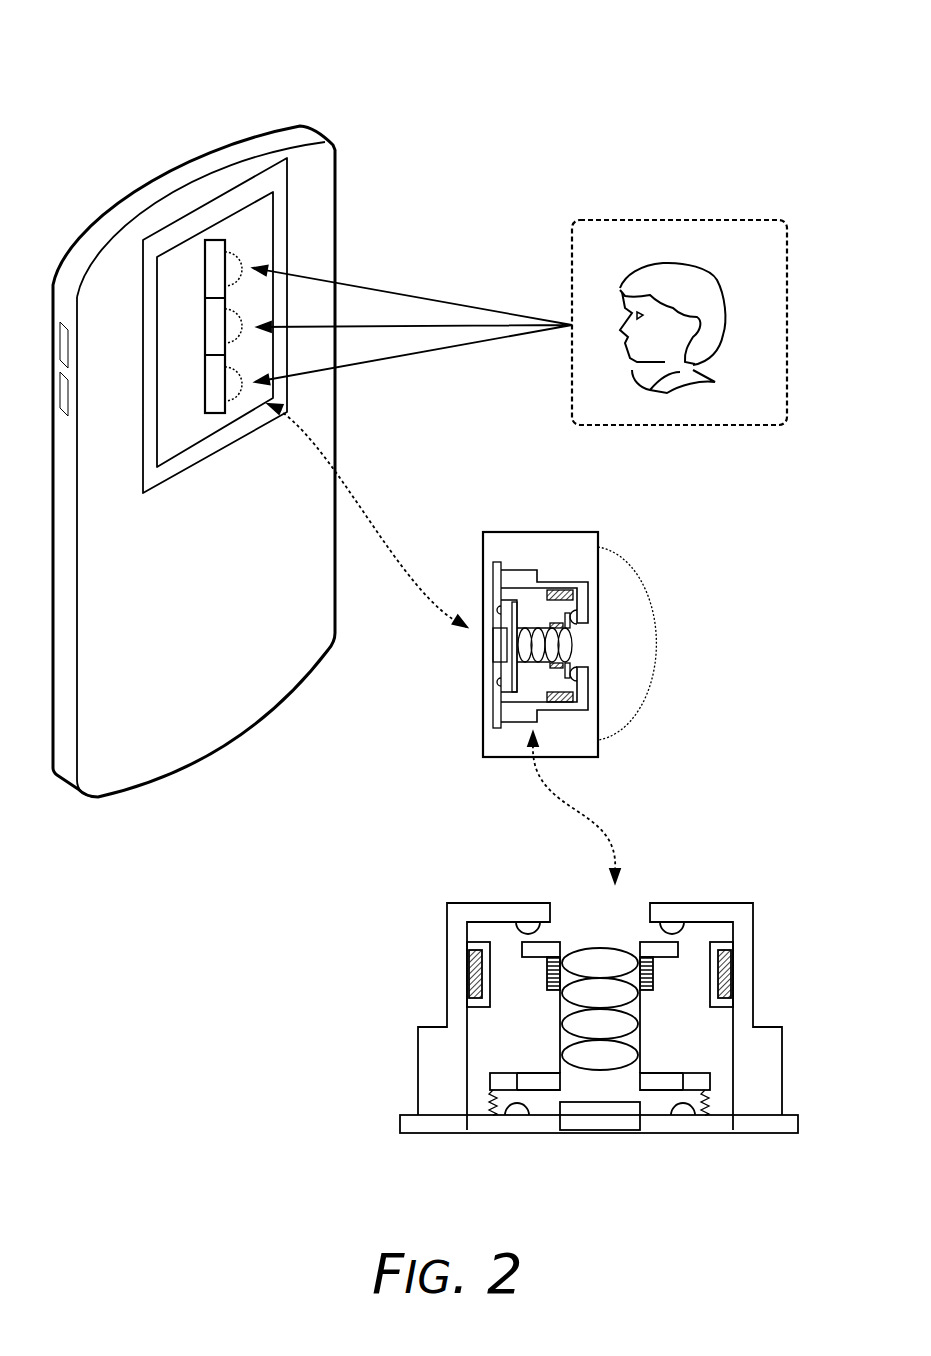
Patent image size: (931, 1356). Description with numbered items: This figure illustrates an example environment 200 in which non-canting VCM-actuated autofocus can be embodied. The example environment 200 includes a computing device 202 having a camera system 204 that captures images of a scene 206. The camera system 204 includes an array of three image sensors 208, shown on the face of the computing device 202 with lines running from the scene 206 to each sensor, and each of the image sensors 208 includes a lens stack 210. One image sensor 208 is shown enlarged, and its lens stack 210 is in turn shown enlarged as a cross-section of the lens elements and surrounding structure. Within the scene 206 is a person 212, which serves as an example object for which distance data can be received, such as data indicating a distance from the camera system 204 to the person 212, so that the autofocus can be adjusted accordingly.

The example environment 200 is at (115, 52).
The computing device 202 is at (303, 127).
The camera system 204 is at (178, 240).
The scene 206 is at (766, 220).
The image sensor 208 is at (663, 547).
The lens stack 210 is at (635, 940).
The person 212 is at (685, 262).